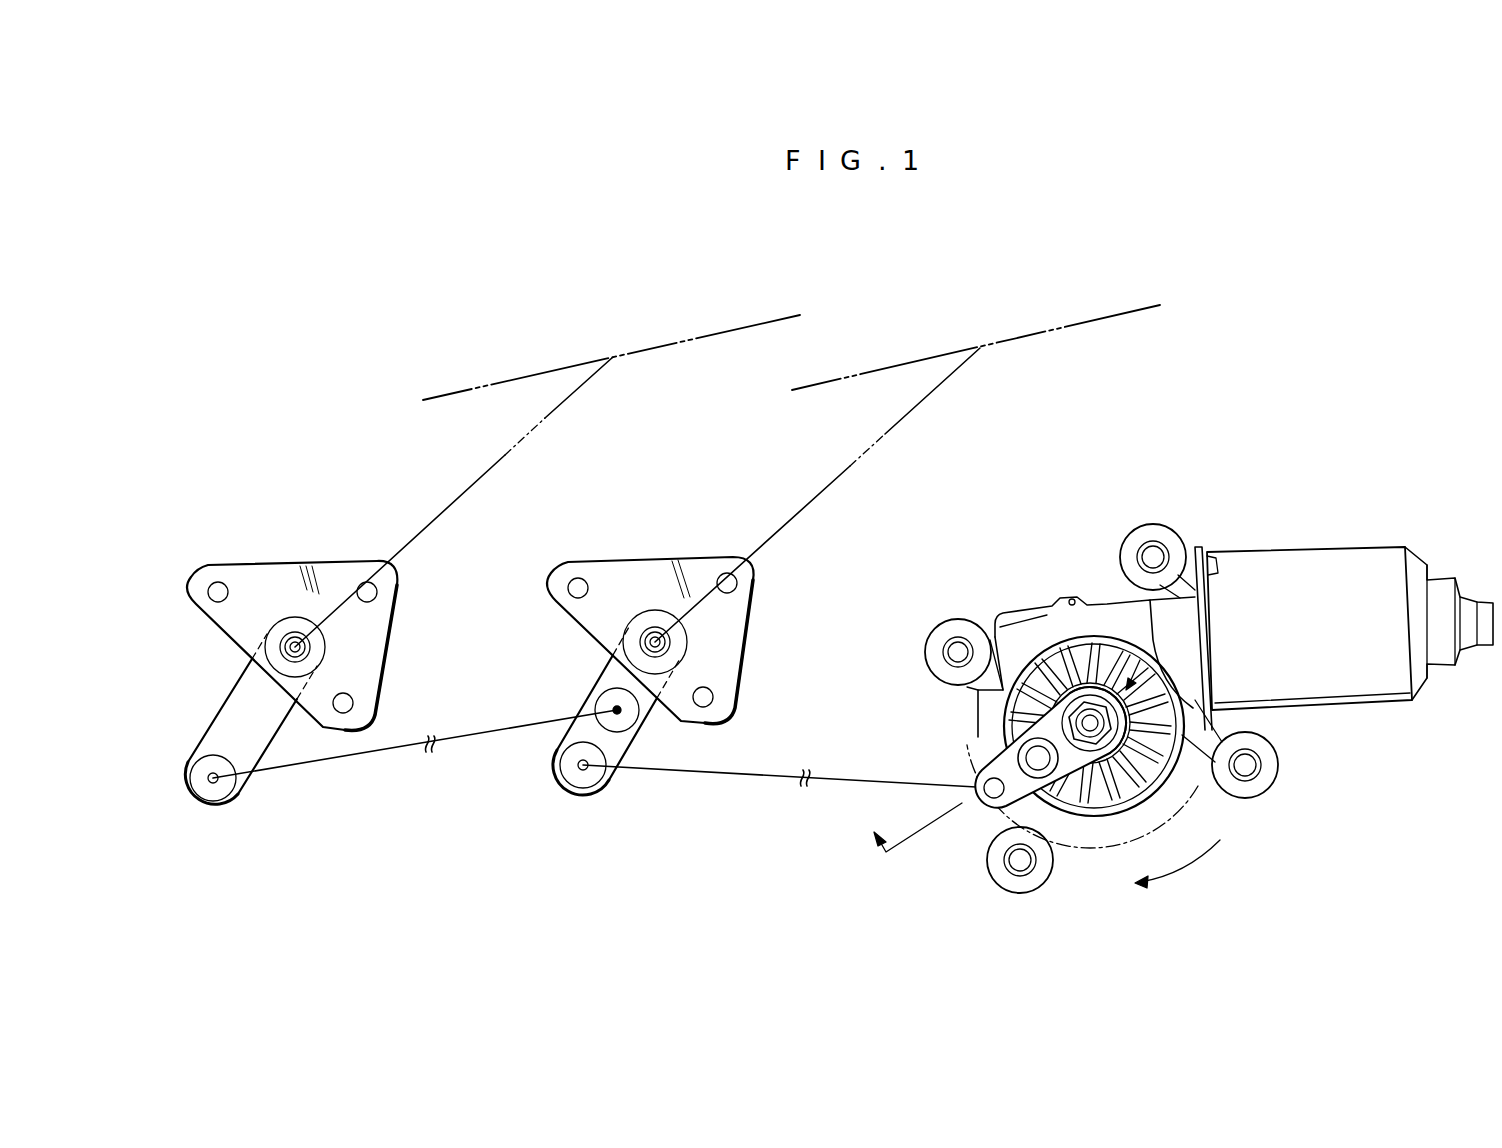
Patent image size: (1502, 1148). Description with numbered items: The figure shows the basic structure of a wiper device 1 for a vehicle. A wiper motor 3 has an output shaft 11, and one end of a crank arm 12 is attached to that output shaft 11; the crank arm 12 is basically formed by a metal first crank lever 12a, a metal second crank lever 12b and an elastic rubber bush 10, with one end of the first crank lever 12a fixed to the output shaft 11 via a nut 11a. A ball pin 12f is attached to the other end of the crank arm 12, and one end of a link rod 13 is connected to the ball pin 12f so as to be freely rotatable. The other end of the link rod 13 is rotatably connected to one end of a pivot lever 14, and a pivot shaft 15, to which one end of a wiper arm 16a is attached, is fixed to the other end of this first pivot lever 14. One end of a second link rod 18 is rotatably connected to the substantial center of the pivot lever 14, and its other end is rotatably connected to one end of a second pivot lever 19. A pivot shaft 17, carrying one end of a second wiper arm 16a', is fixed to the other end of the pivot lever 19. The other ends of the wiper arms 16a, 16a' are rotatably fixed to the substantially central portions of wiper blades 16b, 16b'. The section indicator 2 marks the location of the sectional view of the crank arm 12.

The wiper device 1 is at (458, 271).
The section line of FIG. 2 is at (1003, 748).
The wiper motor 3 is at (1303, 545).
The elastic rubber bush 10 is at (1098, 757).
The output shaft 11 is at (978, 737).
The nut 11a is at (1093, 708).
The crank arm 12 is at (1080, 778).
The first crank lever 12a is at (1110, 775).
The second crank lever 12b is at (982, 818).
The ball pin 12f is at (980, 777).
The link rod 13 is at (843, 782).
The pivot lever 14 is at (592, 686).
The pivot shaft 15 is at (655, 640).
The wiper arm 16a is at (817, 495).
The wiper blade 16b is at (976, 329).
The wiper arm 16a' is at (465, 502).
The wiper blade 16b' is at (611, 335).
The pivot shaft 17 is at (312, 652).
The link rod 18 is at (355, 757).
The pivot lever 19 is at (218, 704).